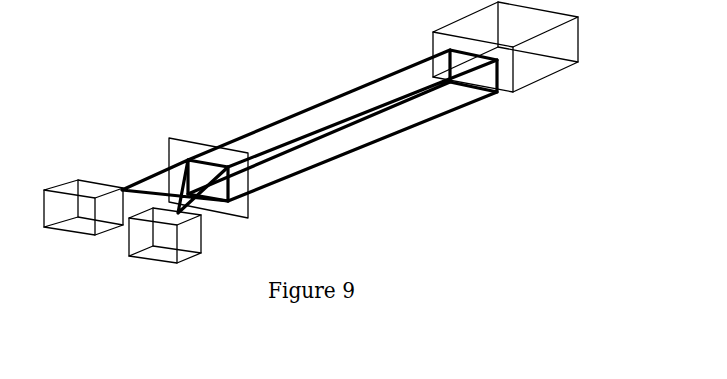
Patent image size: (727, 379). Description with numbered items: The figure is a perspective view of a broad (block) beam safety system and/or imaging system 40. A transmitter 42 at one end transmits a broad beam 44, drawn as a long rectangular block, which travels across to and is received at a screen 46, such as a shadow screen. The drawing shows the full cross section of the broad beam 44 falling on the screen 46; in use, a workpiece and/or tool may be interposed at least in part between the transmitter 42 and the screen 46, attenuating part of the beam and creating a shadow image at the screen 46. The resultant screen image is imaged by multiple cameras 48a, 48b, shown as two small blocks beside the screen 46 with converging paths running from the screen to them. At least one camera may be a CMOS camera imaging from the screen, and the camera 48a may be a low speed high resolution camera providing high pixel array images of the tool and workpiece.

The broad beam safety system and/or imaging system 40 is at (377, 170).
The transmitter 42 is at (547, 105).
The broad beam 44 is at (288, 102).
The screen 46 is at (148, 147).
The camera 48a is at (67, 243).
The camera 48b is at (148, 270).